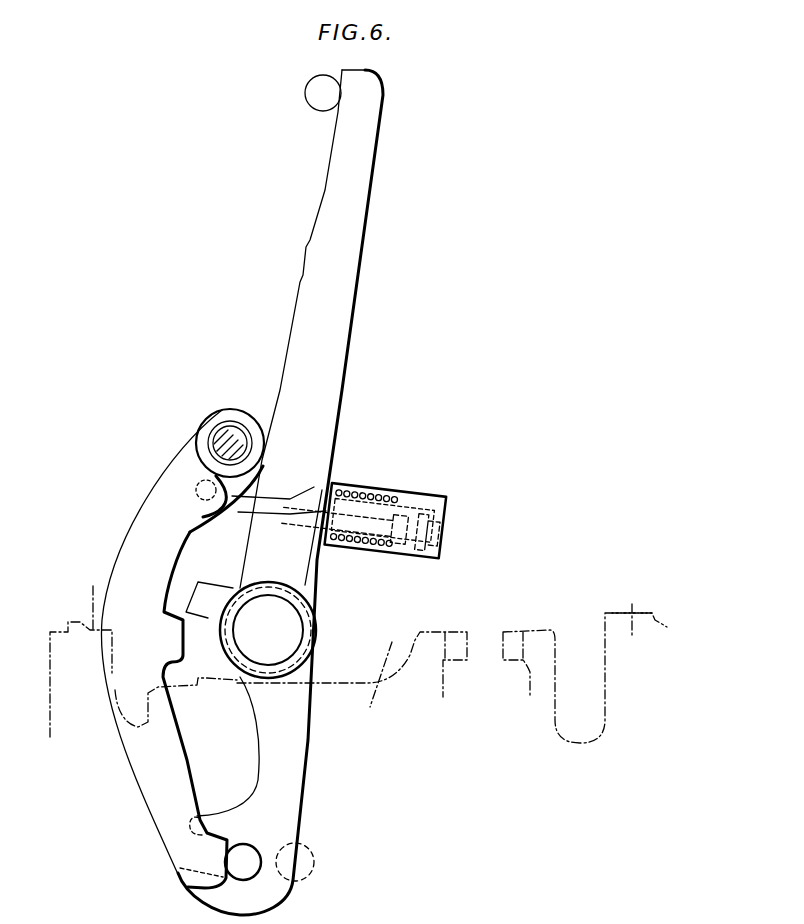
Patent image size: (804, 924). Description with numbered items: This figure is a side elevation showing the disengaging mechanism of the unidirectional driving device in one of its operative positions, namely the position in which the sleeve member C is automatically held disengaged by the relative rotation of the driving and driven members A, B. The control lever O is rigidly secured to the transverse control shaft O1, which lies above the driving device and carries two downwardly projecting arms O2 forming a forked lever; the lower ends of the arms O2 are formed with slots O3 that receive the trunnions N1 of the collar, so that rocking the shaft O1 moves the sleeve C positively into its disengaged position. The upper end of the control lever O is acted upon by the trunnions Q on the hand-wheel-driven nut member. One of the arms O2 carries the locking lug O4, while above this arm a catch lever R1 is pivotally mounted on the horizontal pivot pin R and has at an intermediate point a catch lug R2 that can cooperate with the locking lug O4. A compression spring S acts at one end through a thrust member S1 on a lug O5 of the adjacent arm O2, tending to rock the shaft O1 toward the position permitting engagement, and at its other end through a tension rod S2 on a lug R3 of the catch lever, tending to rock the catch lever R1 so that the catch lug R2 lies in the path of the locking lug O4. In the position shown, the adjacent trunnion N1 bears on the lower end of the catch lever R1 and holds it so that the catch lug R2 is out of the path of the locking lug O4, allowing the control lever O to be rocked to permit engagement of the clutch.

The control lever O is at (325, 358).
The control shaft O1 is at (285, 630).
The arms O2 is at (285, 737).
The slots O3 is at (247, 857).
The locking lug O4 is at (205, 585).
The lug O5 is at (297, 557).
The trunnions Q is at (311, 80).
The pivot pin R is at (238, 428).
The catch lever R1 is at (157, 485).
The catch lug R2 is at (167, 635).
The lug R3 is at (212, 440).
The compression spring S is at (388, 488).
The thrust member S1 is at (333, 490).
The tension rod S2 is at (243, 585).
The trunnions N1 is at (263, 850).
The driving member A is at (92, 598).
The driven member B is at (632, 610).
The sleeve member C is at (382, 666).